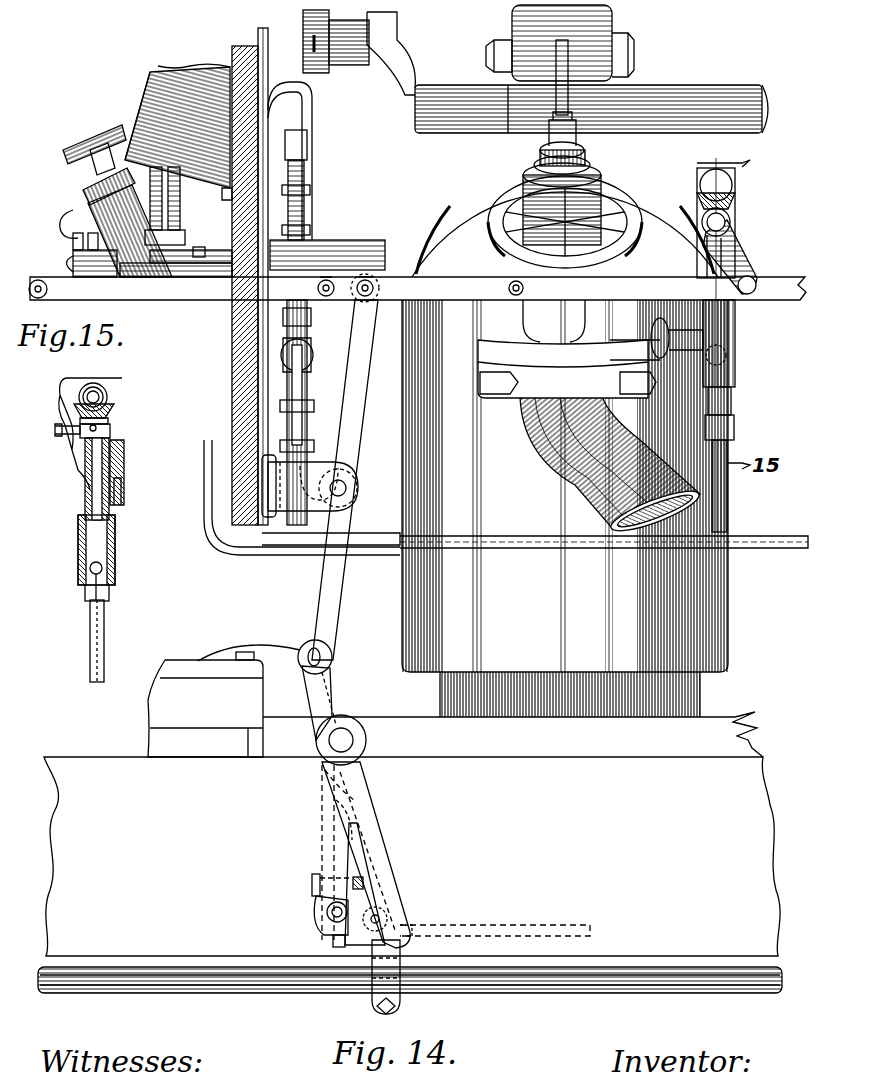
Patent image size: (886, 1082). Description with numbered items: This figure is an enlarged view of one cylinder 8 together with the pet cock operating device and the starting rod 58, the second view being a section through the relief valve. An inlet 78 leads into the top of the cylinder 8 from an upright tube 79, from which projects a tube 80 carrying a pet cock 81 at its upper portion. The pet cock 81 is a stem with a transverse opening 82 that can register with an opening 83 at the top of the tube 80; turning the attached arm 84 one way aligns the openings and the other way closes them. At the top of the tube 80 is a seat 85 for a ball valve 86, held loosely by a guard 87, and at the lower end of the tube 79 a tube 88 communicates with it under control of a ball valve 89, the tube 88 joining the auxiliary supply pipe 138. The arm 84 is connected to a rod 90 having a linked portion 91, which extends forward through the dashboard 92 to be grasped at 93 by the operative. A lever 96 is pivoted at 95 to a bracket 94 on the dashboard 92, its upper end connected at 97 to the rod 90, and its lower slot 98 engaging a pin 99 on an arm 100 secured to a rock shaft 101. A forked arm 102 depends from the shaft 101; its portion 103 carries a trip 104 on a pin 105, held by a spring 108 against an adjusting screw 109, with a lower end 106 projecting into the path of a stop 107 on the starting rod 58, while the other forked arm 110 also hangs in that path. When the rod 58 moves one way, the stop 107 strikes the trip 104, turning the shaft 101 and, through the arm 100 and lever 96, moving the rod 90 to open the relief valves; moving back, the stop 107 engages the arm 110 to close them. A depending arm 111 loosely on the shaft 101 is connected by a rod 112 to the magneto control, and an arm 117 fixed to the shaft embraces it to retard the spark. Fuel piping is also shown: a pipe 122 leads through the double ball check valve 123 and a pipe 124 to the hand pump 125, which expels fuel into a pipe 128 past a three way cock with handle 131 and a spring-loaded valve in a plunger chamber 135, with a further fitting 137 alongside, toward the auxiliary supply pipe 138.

In FIG. 14, the cylinder 8 is at (455, 242).
In FIG. 14, the starting rod 58 is at (410, 990).
In FIG. 14, the inlet 78 is at (690, 337).
In FIG. 14, the tube 79 is at (736, 352).
In FIG. 15, the tube 79 is at (112, 548).
In FIG. 15, the tube 80 is at (90, 488).
In FIG. 15, the pet cock 81 is at (110, 432).
In FIG. 15, the opening 82 is at (84, 440).
In FIG. 15, the opening 83 is at (108, 420).
In FIG. 14, the arm 84 is at (735, 248).
In FIG. 15, the arm 84 is at (125, 470).
In FIG. 14, the seat 85 is at (736, 203).
In FIG. 15, the seat 85 is at (114, 406).
In FIG. 15, the ball valve 86 is at (108, 393).
In FIG. 15, the guard 87 is at (70, 378).
In FIG. 14, the tube 88 is at (728, 440).
In FIG. 15, the tube 88 is at (108, 652).
In FIG. 15, the ball valve 89 is at (90, 568).
In FIG. 14, the rod 90 is at (786, 294).
In FIG. 14, the linked portion 91 is at (460, 302).
In FIG. 14, the dashboard 92 is at (232, 50).
In FIG. 14, the grasping portion 93 is at (42, 280).
In FIG. 14, the bracket 94 is at (318, 474).
In FIG. 14, the pivot 95 is at (344, 490).
In FIG. 14, the lever 96 is at (368, 352).
In FIG. 14, the connection 97 is at (367, 282).
In FIG. 14, the slot 98 is at (326, 652).
In FIG. 14, the pin 99 is at (322, 660).
In FIG. 14, the arm 100 is at (350, 696).
In FIG. 14, the rock shaft 101 is at (355, 736).
In FIG. 14, the bifurcated arm 102 is at (355, 778).
In FIG. 14, the arm portion 103 is at (345, 850).
In FIG. 14, the trip 104 is at (326, 908).
In FIG. 14, the pin 105 is at (330, 930).
In FIG. 14, the block 106 is at (334, 946).
In FIG. 14, the stop 107 is at (392, 968).
In FIG. 14, the spring 108 is at (312, 884).
In FIG. 14, the adjusting screw 109 is at (362, 876).
In FIG. 14, the forked arm 110 is at (388, 872).
In FIG. 14, the depending arm 111 is at (395, 886).
In FIG. 14, the rod 112 is at (498, 920).
In FIG. 14, the arm 117 is at (395, 802).
In FIG. 14, the pipe 122 is at (262, 36).
In FIG. 14, the double ball check valve 123 is at (300, 340).
In FIG. 14, the pipe 124 is at (250, 560).
In FIG. 14, the hand pump 125 is at (110, 200).
In FIG. 14, the pipe 128 is at (218, 250).
In FIG. 14, the handle 131 is at (68, 222).
In FIG. 14, the plunger chamber 135 is at (182, 200).
In FIG. 14, the rod 137 is at (326, 176).
In FIG. 14, the auxiliary supply pipe 138 is at (507, 548).